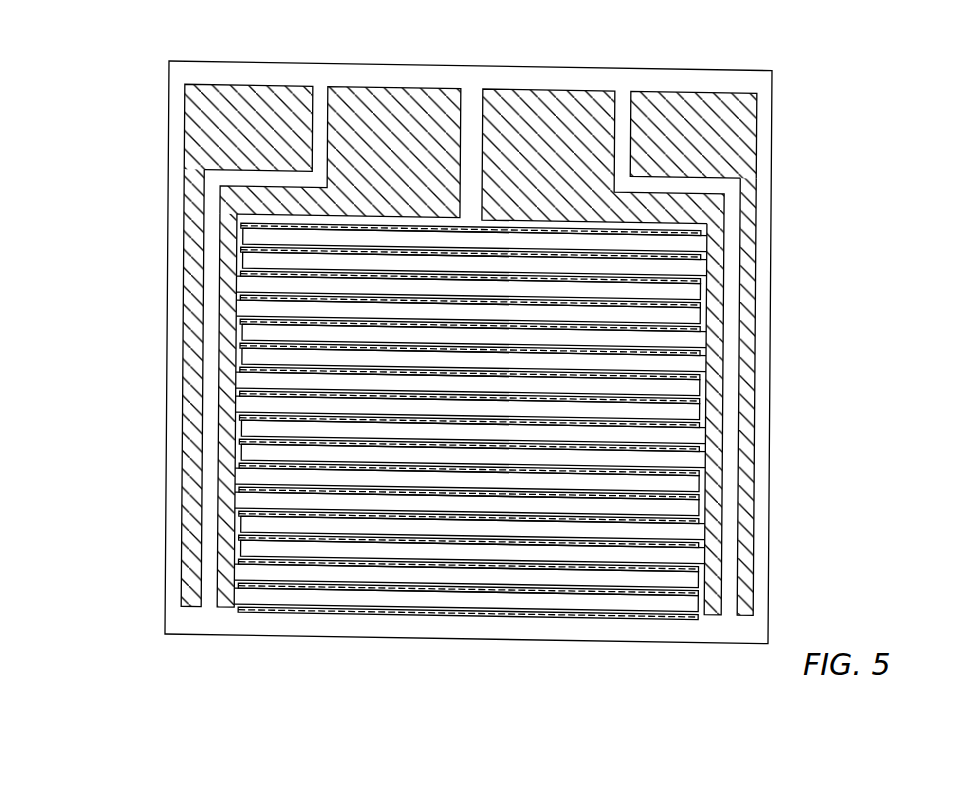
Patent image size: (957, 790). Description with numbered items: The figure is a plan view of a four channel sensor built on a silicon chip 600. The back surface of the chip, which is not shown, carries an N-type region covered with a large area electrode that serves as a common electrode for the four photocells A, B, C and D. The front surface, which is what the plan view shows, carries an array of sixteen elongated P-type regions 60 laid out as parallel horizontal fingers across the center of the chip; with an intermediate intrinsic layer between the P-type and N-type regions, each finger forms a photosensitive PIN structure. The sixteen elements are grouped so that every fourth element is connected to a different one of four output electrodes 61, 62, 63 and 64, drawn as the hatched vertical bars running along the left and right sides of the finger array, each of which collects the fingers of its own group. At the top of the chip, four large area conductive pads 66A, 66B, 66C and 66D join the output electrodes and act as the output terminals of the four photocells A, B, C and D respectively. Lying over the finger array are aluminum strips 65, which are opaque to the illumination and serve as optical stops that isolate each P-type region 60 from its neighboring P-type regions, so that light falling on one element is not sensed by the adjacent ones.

The silicon chip 600 is at (72, 77).
The conductive pad 66A is at (698, 93).
The conductive pad 66B is at (262, 83).
The conductive pad 66C is at (551, 89).
The conductive pad 66D is at (393, 87).
The elongated P-type regions 60 is at (240, 290).
The aluminum strips 65 is at (240, 365).
The output electrode 61 is at (757, 312).
The output electrode 62 is at (725, 472).
The output electrode 63 is at (185, 498).
The output electrode 64 is at (222, 607).